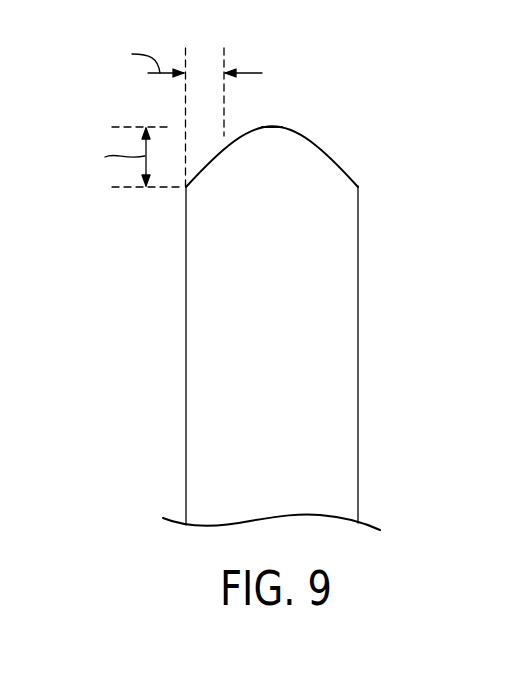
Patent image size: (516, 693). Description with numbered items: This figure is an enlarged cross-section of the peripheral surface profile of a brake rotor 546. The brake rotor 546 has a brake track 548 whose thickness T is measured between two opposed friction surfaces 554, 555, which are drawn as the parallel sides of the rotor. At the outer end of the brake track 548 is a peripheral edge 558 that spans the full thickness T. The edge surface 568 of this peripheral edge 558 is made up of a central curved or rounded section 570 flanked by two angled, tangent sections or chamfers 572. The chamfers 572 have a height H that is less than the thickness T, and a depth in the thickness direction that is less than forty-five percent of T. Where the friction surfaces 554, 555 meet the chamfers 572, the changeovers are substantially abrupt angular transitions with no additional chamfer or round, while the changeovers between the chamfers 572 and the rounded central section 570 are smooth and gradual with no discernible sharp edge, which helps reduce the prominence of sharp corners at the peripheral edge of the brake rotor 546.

The brake rotor 546 is at (90, 120).
The brake track 548 is at (262, 358).
The friction surface 554 is at (186, 328).
The friction surface 555 is at (359, 328).
The peripheral edge 558 is at (318, 148).
The edge surface 568 is at (306, 148).
The central curved or rounded section 570 is at (272, 125).
The chamfers 572 is at (340, 163).